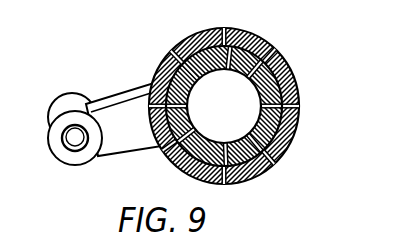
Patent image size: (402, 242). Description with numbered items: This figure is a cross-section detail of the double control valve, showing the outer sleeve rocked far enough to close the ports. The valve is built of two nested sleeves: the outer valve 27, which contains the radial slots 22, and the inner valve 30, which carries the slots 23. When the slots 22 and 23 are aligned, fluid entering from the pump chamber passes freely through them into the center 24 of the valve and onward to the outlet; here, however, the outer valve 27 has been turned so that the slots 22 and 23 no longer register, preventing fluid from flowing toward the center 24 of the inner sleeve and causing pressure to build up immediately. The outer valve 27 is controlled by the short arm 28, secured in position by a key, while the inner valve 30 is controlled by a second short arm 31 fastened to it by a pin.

The slots in the outer valve sleeve 22 is at (274, 151).
The slots in the inner valve sleeve 23 is at (297, 132).
The center of the valve 24 is at (224, 106).
The outer valve 27 is at (262, 43).
The short arm 28 is at (63, 155).
The inner valve 30 is at (295, 82).
The short arm 31 is at (63, 103).